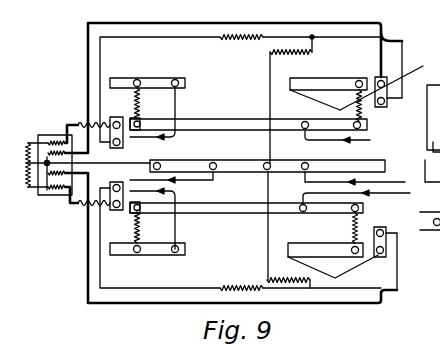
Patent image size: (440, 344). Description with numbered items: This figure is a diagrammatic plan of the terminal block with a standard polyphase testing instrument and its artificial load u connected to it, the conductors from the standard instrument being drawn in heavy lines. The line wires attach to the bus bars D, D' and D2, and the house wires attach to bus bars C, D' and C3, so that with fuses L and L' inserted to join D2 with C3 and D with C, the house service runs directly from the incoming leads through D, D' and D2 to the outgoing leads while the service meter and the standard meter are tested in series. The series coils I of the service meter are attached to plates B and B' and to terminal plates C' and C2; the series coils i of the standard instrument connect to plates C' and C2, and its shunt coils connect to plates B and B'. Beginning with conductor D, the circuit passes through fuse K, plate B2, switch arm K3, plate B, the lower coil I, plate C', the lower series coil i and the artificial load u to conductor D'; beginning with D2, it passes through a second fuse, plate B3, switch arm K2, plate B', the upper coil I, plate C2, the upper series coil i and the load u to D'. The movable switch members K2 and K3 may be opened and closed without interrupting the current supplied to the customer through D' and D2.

The artificial load u is at (45, 135).
The series coil of standard meter i is at (58, 140).
The terminal plate C' is at (91, 219).
The terminal plate C2 is at (141, 123).
The fuse L is at (127, 103).
The fuse L' is at (149, 227).
The bus bar C3 is at (160, 79).
The bus bar C is at (147, 261).
The series coils of the meter I is at (243, 35).
The bus bar D2 is at (255, 121).
The bus bar D' is at (267, 156).
The bus bar D is at (246, 199).
The plate B3 is at (332, 79).
The movable switch member K2 is at (313, 100).
The fuse K is at (338, 228).
The bus bar B' is at (388, 101).
The bus bar B is at (397, 254).
The plate B2 is at (297, 247).
The movable switch member K3 is at (345, 270).